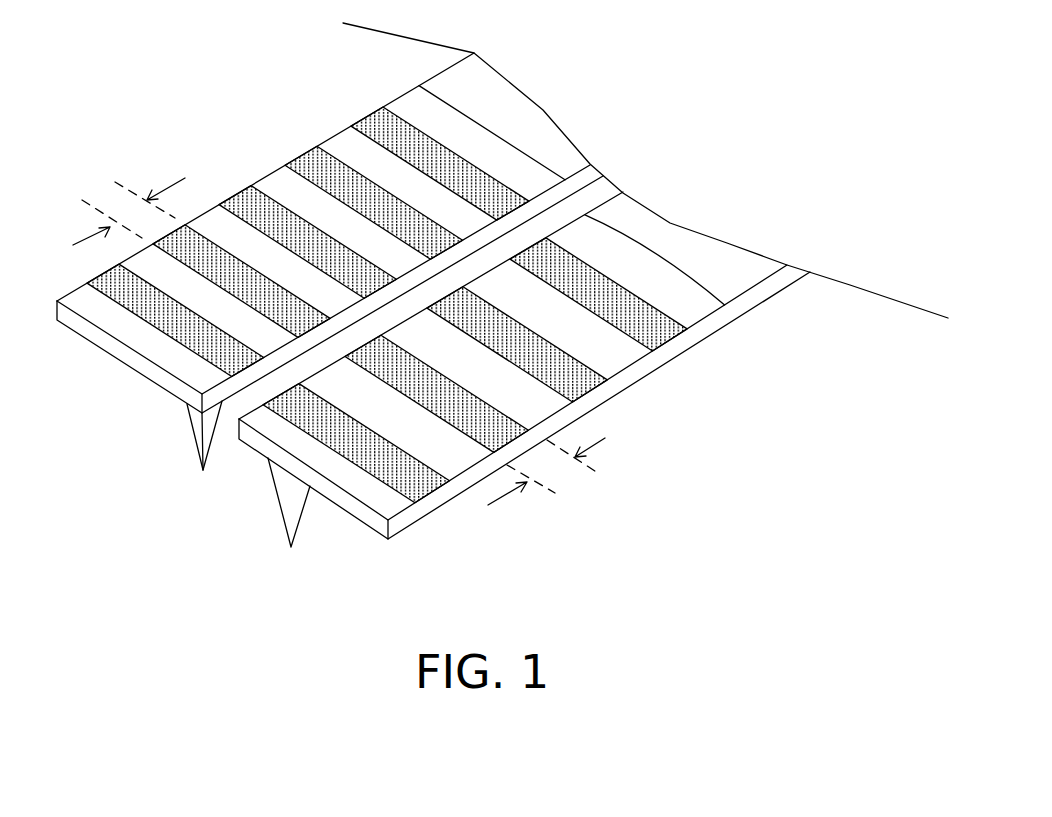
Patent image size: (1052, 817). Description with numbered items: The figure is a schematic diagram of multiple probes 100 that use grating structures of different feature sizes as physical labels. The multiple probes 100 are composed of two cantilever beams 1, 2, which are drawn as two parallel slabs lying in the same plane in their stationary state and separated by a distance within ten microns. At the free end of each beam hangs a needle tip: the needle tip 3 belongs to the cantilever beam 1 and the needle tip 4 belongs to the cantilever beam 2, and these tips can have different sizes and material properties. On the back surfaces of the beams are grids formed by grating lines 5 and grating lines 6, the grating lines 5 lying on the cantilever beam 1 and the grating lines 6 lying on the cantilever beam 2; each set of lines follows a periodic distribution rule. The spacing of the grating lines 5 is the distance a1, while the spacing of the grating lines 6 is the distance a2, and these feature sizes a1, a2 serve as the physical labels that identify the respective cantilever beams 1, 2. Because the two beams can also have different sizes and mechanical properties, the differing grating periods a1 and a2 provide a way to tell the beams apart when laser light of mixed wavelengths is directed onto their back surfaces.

The multiple probes 100 is at (493, 299).
The cantilever beam 1 is at (455, 87).
The cantilever beam 2 is at (742, 272).
The needle tip 3 is at (202, 428).
The needle tip 4 is at (293, 508).
The grating lines 5 is at (310, 177).
The grating lines 6 is at (603, 330).
The distance of the lines a1 is at (126, 206).
The distance of the lines a2 is at (548, 476).